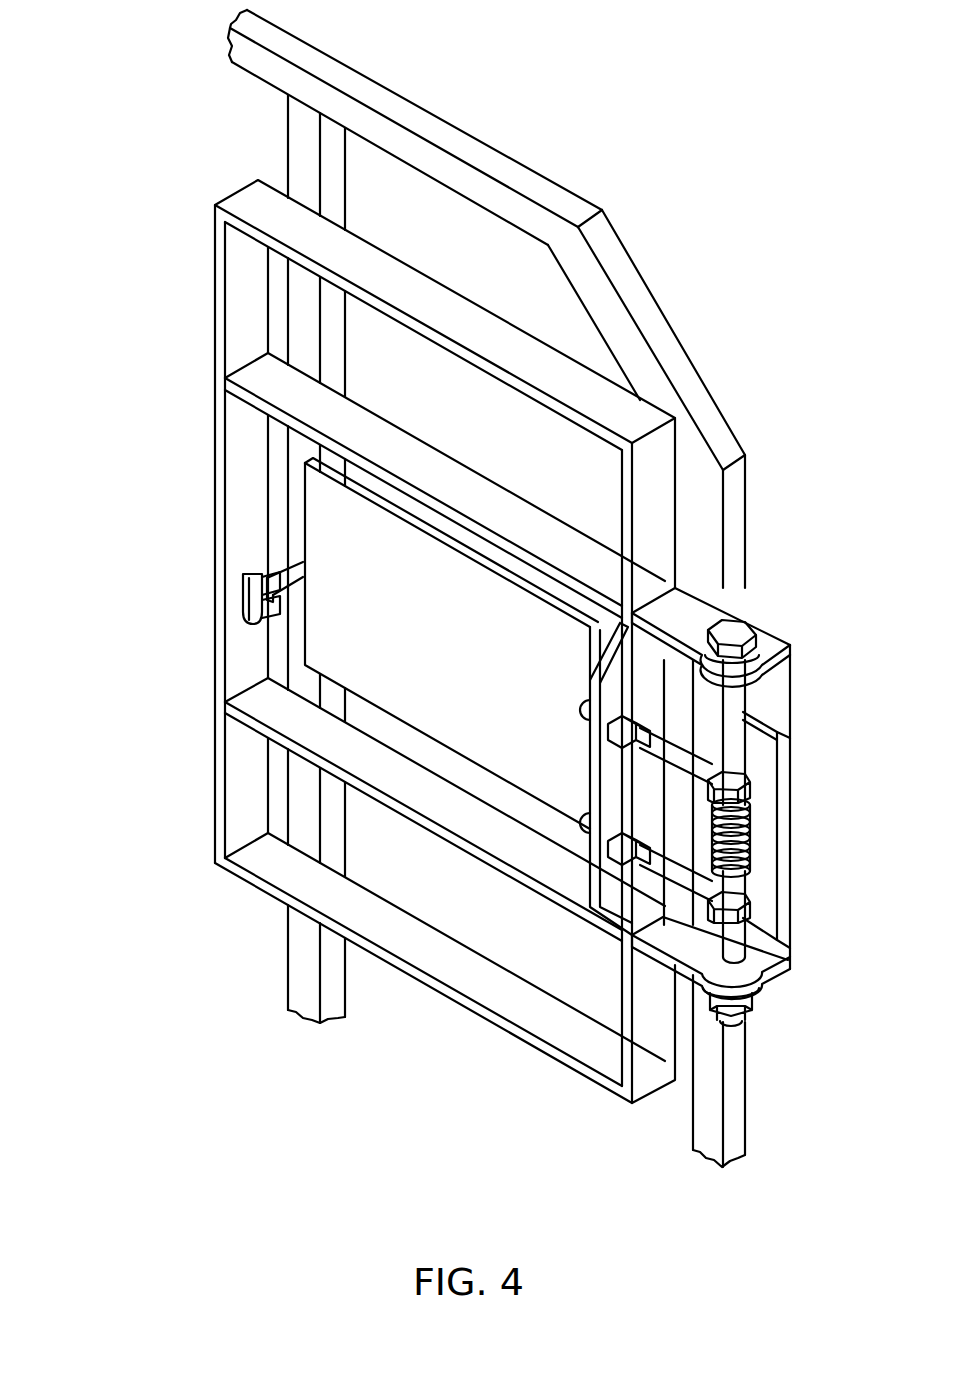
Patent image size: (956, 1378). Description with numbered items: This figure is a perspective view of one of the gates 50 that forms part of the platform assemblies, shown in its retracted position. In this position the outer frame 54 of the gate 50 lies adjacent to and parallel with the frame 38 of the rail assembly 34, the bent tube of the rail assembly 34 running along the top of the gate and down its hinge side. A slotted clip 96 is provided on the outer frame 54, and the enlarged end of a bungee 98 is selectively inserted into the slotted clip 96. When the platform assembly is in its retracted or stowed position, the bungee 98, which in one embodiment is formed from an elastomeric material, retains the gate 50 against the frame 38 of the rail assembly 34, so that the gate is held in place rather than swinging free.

The rail assembly 34 is at (486, 588).
The frame of the rail assembly 38 is at (537, 183).
The gate 50 is at (368, 601).
The outer frame 54 is at (213, 798).
The slotted clip 96 is at (247, 567).
The bungee 98 is at (287, 570).